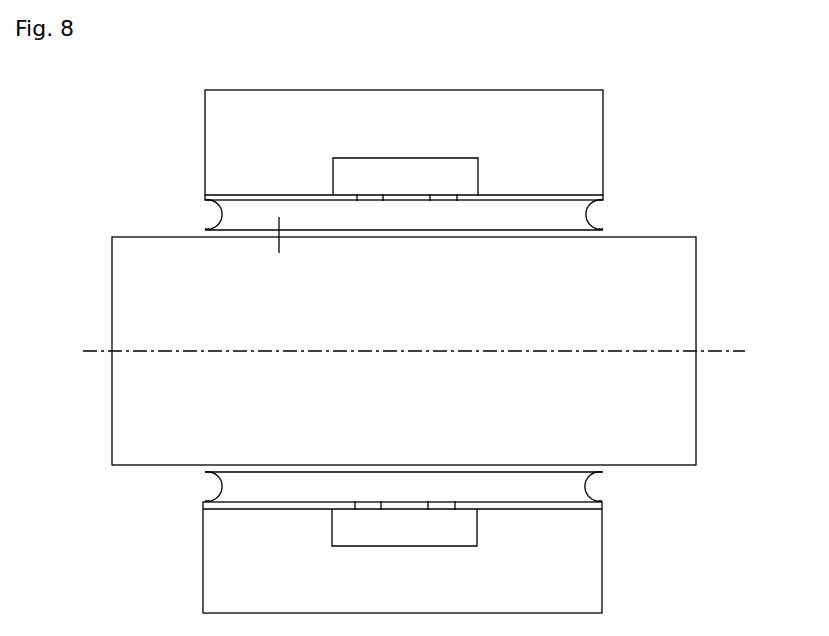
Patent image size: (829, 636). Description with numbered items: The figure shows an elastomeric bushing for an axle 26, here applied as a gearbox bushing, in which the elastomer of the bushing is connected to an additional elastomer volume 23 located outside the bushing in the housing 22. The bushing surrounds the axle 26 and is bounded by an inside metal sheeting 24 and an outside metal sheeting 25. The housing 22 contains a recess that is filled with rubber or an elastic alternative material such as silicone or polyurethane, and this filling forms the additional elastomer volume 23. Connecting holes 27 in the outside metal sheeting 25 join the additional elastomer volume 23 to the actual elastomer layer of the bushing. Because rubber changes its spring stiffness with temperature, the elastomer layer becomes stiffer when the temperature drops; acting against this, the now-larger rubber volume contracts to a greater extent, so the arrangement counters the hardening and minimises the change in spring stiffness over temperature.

The housing 22 is at (603, 121).
The additional elastomer volume in housing 23 is at (404, 175).
The inside metal sheeting of bushing 24 is at (553, 231).
The outside metal sheeting of bushing 25 is at (217, 204).
The axle 26 is at (696, 283).
The connecting holes in outside metal sheeting 27 is at (368, 198).